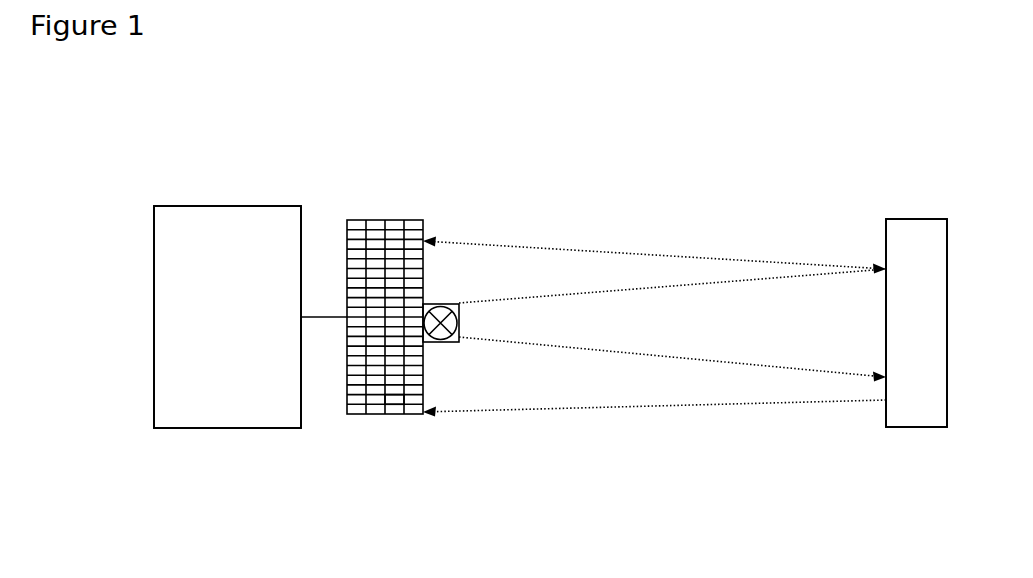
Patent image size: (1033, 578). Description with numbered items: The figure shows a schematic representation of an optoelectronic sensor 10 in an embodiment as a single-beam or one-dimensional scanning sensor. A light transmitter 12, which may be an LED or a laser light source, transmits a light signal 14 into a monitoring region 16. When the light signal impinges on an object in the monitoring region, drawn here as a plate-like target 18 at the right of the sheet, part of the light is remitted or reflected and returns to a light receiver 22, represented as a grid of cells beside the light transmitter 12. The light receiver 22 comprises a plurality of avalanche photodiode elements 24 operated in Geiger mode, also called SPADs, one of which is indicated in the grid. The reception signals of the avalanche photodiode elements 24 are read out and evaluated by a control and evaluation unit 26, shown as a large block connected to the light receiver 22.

The optoelectronic sensor 10 is at (157, 168).
The light transmitter 12 is at (443, 320).
The light signal 14 is at (687, 360).
The monitoring region 16 is at (712, 203).
The target object / reflector 18 is at (910, 402).
The light receiver 22 is at (353, 417).
The avalanche photodiode elements 24 is at (397, 400).
The control and evaluation unit 26 is at (240, 412).